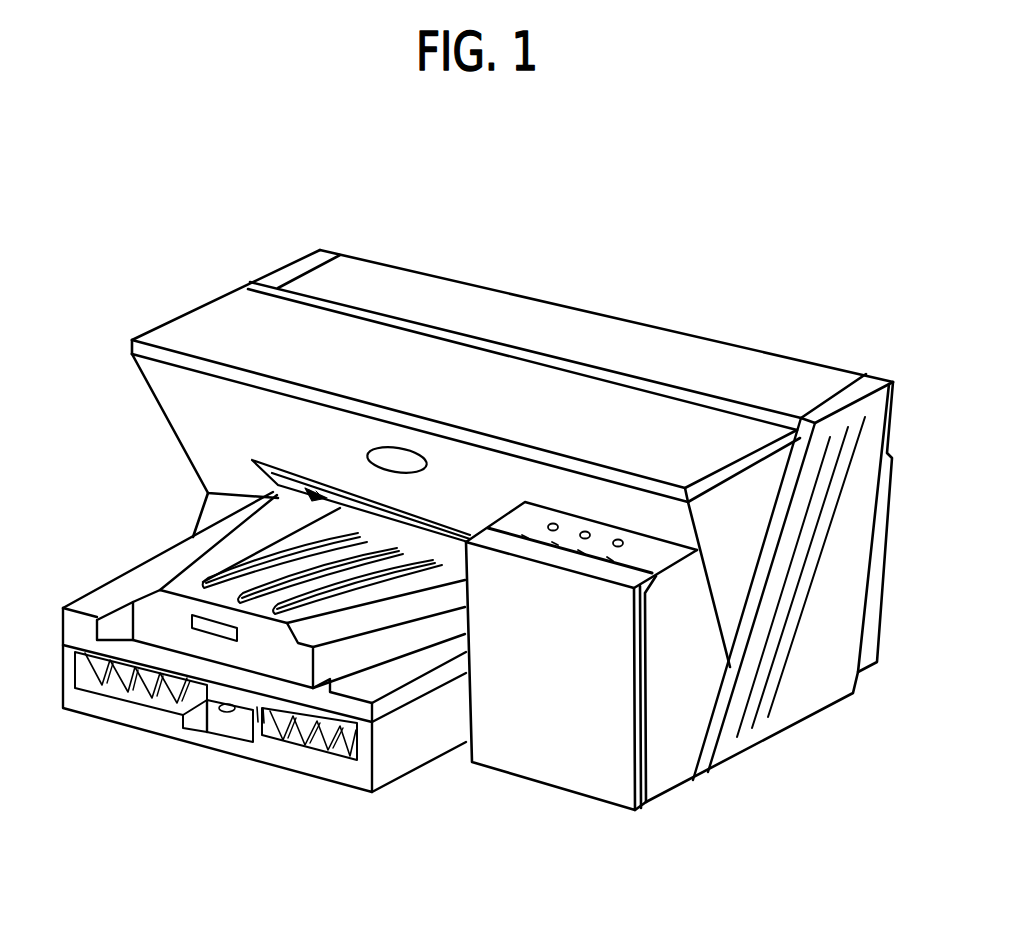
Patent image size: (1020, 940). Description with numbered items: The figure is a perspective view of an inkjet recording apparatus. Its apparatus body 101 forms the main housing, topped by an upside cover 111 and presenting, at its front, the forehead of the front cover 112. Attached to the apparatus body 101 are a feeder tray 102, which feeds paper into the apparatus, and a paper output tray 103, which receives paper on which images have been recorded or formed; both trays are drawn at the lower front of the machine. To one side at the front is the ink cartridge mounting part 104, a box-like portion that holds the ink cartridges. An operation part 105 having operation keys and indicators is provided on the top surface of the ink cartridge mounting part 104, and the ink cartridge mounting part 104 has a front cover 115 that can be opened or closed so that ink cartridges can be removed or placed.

The apparatus body 101 is at (589, 239).
The feeder tray 102 is at (264, 753).
The paper output tray 103 is at (132, 603).
The ink cartridge mounting part 104 is at (666, 768).
The operation part 105 is at (641, 549).
The upside cover 111 is at (425, 272).
The forehead of the front cover 112 is at (180, 433).
The front cover 115 is at (556, 771).